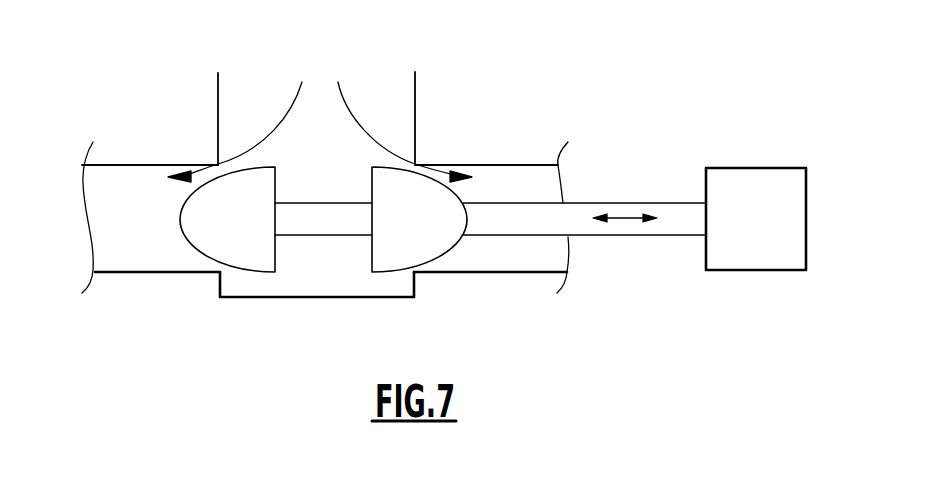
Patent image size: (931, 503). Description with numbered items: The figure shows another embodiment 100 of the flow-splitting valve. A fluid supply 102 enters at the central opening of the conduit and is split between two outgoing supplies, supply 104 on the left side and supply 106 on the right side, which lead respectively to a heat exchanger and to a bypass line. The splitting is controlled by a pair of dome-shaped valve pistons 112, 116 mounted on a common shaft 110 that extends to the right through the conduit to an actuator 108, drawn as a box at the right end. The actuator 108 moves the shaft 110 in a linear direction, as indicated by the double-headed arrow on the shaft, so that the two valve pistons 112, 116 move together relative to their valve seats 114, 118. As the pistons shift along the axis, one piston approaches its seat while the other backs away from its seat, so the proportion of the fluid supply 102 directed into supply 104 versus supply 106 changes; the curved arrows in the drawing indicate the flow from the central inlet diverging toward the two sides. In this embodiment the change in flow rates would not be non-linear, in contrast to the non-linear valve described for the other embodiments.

The embodiment 100 is at (384, 80).
The fluid supply 102 is at (280, 111).
The supply 104 is at (139, 191).
The supply 106 is at (520, 177).
The actuator 108 is at (768, 167).
The shaft 110 is at (500, 218).
The valve piston 112 is at (413, 237).
The valve seat 114 is at (412, 272).
The valve piston 116 is at (228, 237).
The valve seat 118 is at (218, 162).